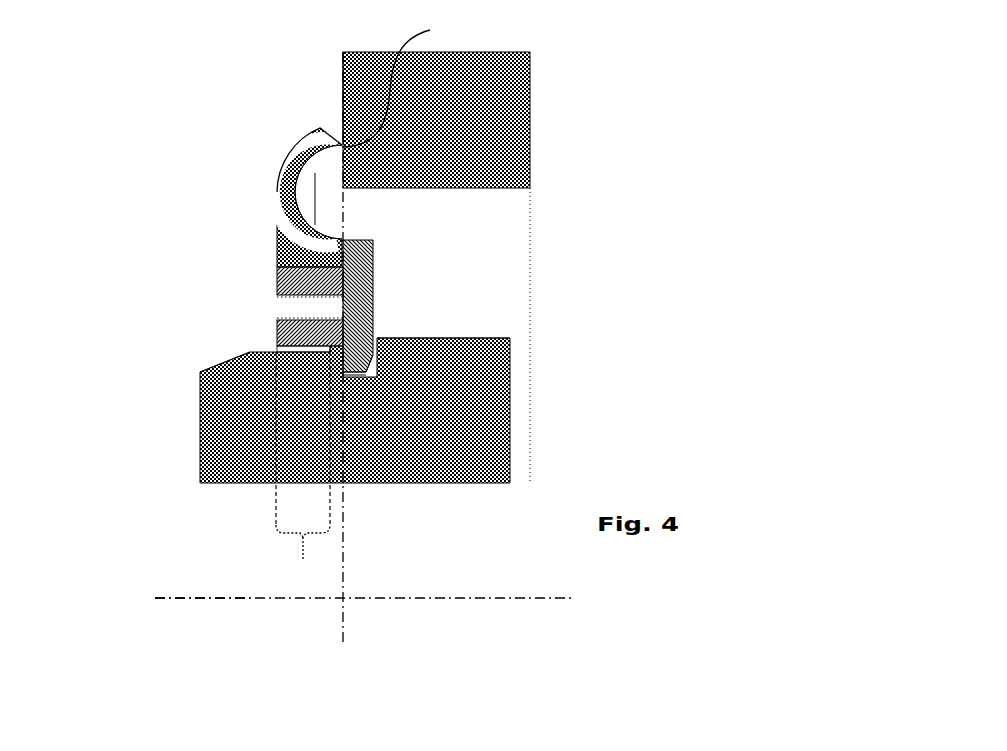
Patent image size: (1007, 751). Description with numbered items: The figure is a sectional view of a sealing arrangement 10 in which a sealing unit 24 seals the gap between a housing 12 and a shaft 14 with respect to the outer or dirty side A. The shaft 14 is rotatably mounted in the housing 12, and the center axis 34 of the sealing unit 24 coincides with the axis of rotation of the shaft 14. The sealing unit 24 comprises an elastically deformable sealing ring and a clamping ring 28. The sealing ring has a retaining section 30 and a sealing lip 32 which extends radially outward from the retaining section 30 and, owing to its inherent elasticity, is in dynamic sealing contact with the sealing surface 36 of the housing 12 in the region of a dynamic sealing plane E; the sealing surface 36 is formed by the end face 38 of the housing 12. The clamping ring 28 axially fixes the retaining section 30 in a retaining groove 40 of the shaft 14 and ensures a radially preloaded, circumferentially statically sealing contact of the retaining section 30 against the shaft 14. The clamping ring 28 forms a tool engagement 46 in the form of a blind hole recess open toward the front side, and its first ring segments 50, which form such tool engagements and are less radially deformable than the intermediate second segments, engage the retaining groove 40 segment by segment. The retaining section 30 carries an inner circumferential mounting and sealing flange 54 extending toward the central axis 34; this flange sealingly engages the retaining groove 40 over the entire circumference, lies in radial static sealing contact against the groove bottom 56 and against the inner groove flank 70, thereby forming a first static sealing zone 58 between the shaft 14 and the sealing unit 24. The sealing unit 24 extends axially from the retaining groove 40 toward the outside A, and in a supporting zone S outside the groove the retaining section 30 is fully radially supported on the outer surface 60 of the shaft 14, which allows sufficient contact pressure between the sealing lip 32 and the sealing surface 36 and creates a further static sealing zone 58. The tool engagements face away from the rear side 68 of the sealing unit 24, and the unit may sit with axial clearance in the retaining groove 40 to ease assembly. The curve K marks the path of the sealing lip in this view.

The sealing arrangement 10 is at (648, 212).
The housing 12 is at (503, 137).
The shaft 14 is at (493, 405).
The sealing unit 24 is at (188, 152).
The clamping ring 28 is at (295, 285).
The retaining section 30 is at (300, 348).
The sealing lip 32 is at (297, 162).
The center axis 34 is at (222, 598).
The sealing surface 36 is at (278, 240).
The end face 38 is at (343, 83).
The retaining groove 40 is at (367, 363).
The tool engagement 46 is at (343, 307).
The first ring segment 50 is at (310, 333).
The mounting and sealing flange 54 is at (353, 374).
The groove bottom 56 is at (353, 378).
The static sealing zone 58 is at (371, 385).
The outer surface 60 is at (472, 337).
The rear side 68 is at (373, 258).
The inner groove flank 70 is at (362, 365).
The curve K is at (394, 80).
The dynamic sealing plane E is at (344, 203).
The outer or dirty side A is at (37, 289).
The supporting zone S is at (300, 557).